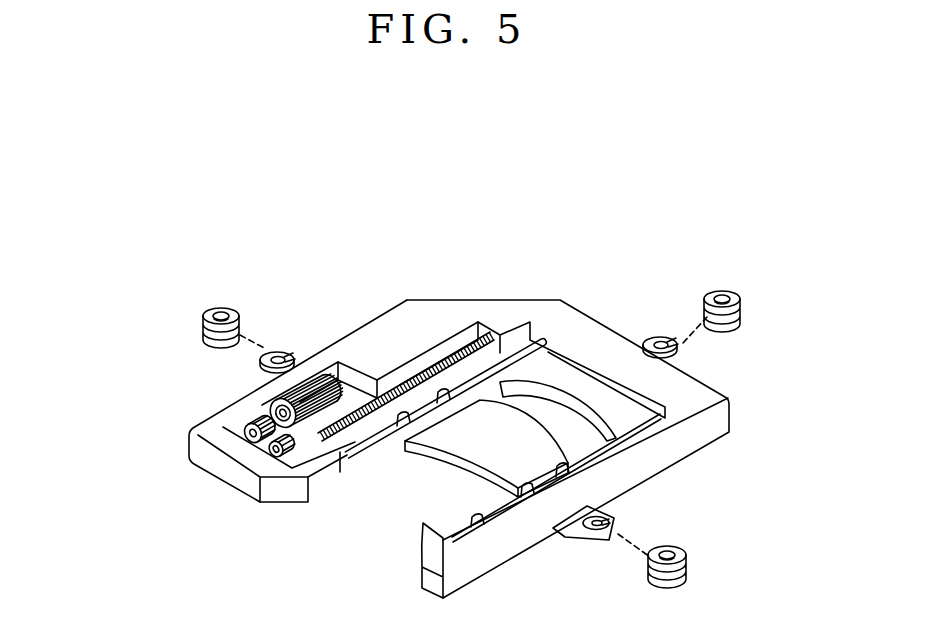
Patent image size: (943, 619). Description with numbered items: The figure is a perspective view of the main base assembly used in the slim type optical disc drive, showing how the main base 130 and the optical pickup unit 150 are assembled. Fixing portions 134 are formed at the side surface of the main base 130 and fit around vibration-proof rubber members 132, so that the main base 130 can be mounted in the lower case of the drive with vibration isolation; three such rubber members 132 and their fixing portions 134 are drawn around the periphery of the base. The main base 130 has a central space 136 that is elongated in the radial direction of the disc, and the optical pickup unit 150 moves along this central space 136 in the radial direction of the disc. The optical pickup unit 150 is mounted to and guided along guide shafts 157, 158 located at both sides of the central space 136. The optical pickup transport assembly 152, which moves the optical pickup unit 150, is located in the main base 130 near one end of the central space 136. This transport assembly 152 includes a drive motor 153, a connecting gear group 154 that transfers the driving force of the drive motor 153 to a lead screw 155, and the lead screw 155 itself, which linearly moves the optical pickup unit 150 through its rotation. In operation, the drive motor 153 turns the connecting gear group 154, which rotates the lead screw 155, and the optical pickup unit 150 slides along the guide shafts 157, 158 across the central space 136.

The main base 130 is at (507, 305).
The vibration-proof rubber member 132 is at (231, 309).
The fixing portion 134 is at (293, 347).
The central space 136 is at (585, 431).
The optical pickup unit 150 is at (490, 450).
The optical pickup transport assembly 152 is at (157, 550).
The drive motor 153 is at (282, 425).
The connecting gear group 154 is at (255, 437).
The lead screw 155 is at (280, 452).
The guide shaft 157 is at (346, 470).
The guide shaft 158 is at (478, 522).